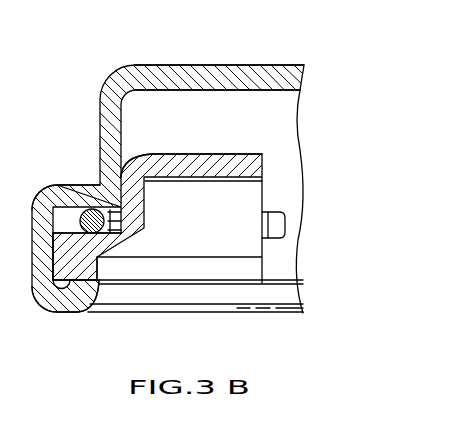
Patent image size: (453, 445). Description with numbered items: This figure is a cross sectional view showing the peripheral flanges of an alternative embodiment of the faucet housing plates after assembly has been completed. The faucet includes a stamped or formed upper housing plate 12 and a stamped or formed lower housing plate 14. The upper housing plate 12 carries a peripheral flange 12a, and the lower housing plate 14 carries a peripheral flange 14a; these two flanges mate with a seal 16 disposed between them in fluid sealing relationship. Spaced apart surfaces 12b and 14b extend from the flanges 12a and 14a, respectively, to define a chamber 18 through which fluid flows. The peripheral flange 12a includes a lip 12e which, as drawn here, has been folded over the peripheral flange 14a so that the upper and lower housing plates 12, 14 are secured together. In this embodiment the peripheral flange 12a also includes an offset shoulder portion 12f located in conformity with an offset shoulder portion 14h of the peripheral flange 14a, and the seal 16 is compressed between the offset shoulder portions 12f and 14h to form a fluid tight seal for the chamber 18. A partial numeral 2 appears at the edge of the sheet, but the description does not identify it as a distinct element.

The partial numeral (clipped at sheet edge) 2 is at (5, 41).
The upper housing plate 12 is at (281, 66).
The peripheral flange 12a is at (28, 200).
The spaced apart surface 12b is at (170, 65).
The lip 12e is at (66, 302).
The offset shoulder portion 12f is at (100, 183).
The lower housing plate 14 is at (233, 153).
The peripheral flange 14a is at (130, 283).
The spaced apart surface 14b is at (167, 154).
The offset shoulder portion 14h is at (82, 183).
The seal 16 is at (121, 222).
The chamber 18 is at (217, 100).